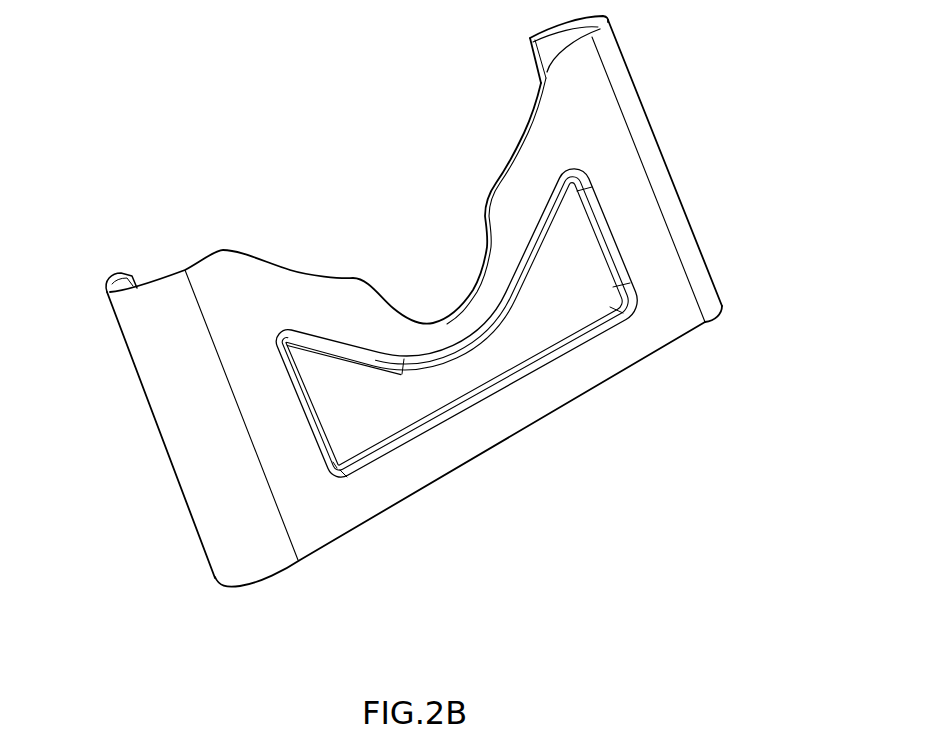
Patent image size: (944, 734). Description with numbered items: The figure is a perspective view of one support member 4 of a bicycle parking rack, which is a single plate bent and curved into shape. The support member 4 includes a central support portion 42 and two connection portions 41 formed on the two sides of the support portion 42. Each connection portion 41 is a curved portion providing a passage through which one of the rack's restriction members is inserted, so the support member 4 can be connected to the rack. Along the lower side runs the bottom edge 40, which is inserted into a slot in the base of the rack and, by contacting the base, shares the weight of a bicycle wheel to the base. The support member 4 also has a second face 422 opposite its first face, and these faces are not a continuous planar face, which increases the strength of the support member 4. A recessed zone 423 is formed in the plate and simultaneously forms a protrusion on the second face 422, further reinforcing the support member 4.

The support member 4 is at (183, 552).
The bottom edge 40 is at (597, 387).
The connection portion 41 is at (657, 180).
The support portion 42 is at (540, 157).
The second face 422 is at (327, 527).
The recessed zone 423 is at (382, 412).